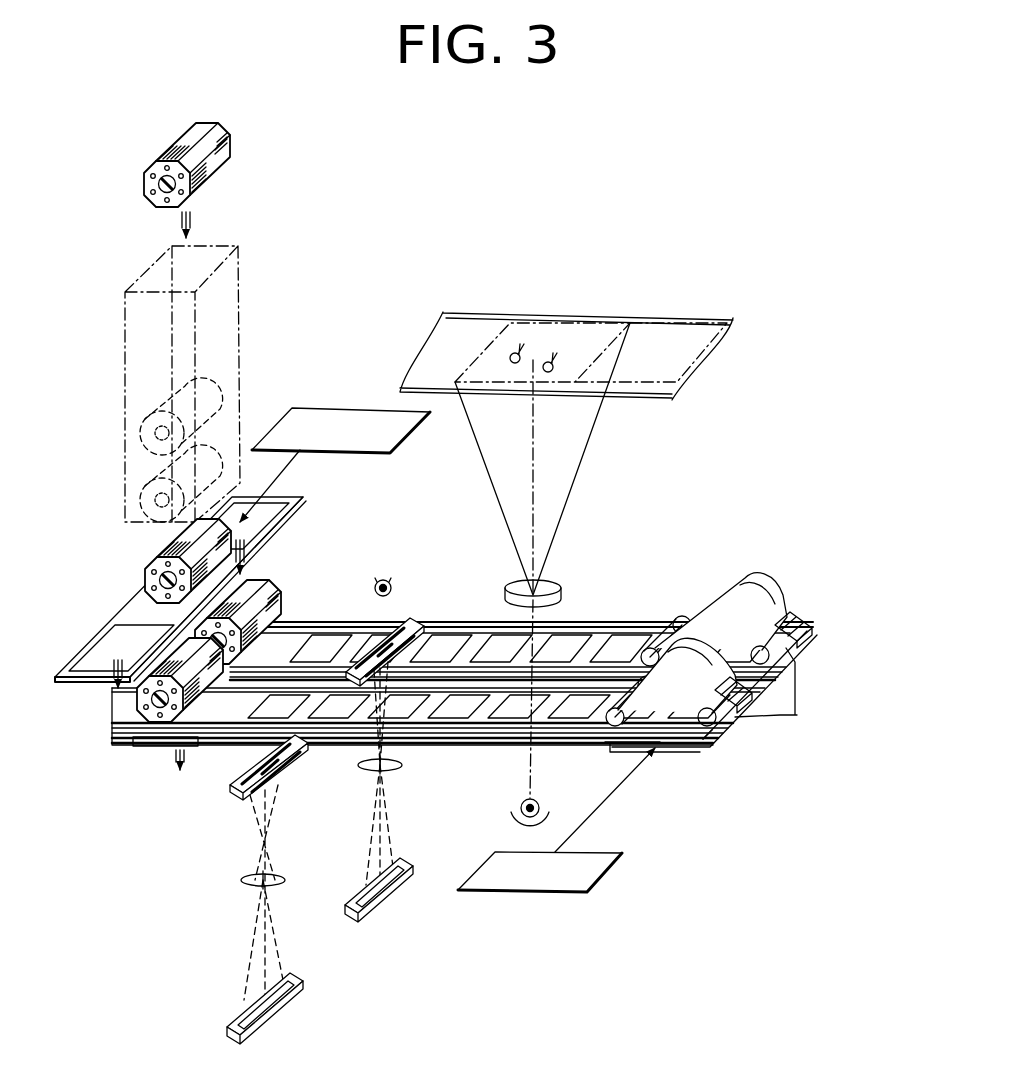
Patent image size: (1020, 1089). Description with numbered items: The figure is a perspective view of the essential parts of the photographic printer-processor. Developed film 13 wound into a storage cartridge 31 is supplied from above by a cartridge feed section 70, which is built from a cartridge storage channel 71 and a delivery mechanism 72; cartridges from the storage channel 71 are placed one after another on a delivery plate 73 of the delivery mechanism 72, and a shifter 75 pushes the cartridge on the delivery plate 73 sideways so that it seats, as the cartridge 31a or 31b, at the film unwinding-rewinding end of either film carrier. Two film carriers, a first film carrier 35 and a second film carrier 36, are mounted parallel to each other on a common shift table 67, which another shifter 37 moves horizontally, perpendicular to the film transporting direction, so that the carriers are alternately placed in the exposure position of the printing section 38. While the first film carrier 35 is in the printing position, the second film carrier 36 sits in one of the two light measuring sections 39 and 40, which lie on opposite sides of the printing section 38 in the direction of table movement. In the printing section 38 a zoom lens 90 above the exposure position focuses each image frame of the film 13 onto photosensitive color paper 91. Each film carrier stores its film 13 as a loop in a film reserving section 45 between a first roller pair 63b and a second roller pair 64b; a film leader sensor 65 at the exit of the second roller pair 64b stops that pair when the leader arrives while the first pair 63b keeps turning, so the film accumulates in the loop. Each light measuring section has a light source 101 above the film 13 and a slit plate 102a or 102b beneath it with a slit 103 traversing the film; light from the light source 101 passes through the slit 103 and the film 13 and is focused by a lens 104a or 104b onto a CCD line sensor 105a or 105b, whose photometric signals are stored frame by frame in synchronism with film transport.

The storage cartridge 31 is at (233, 150).
The motor 31a is at (290, 575).
The motor 31b is at (132, 735).
The photographic film 13 is at (630, 640).
The first film carrier 35 is at (600, 620).
The second film carrier 36 is at (243, 738).
The shifter 37 is at (615, 870).
The printing section 38 is at (590, 470).
The first light measuring section 39 is at (368, 802).
The second light measuring section 40 is at (243, 917).
The film reserving section 45 is at (785, 596).
The first pair of rollers 63b is at (605, 743).
The second pair of rollers 64b is at (708, 724).
The film leader sensor 65 is at (781, 691).
The shift table 67 is at (153, 745).
The cartridge feed section 70 is at (255, 408).
The cartridge storage channel 71 is at (243, 325).
The delivery mechanism 72 is at (137, 580).
The delivery plate 73 is at (134, 608).
The shifter 75 is at (413, 445).
The zoom lens 90 is at (560, 584).
The photosensitive color paper 91 is at (497, 315).
The light source 101 is at (390, 582).
The slit plate 102a is at (412, 625).
The slit plate 102b is at (240, 796).
The slit 103 is at (284, 771).
The lens 104a is at (394, 764).
The lens 104b is at (278, 881).
The line sensor 105a is at (397, 893).
The line sensor 105b is at (285, 1012).